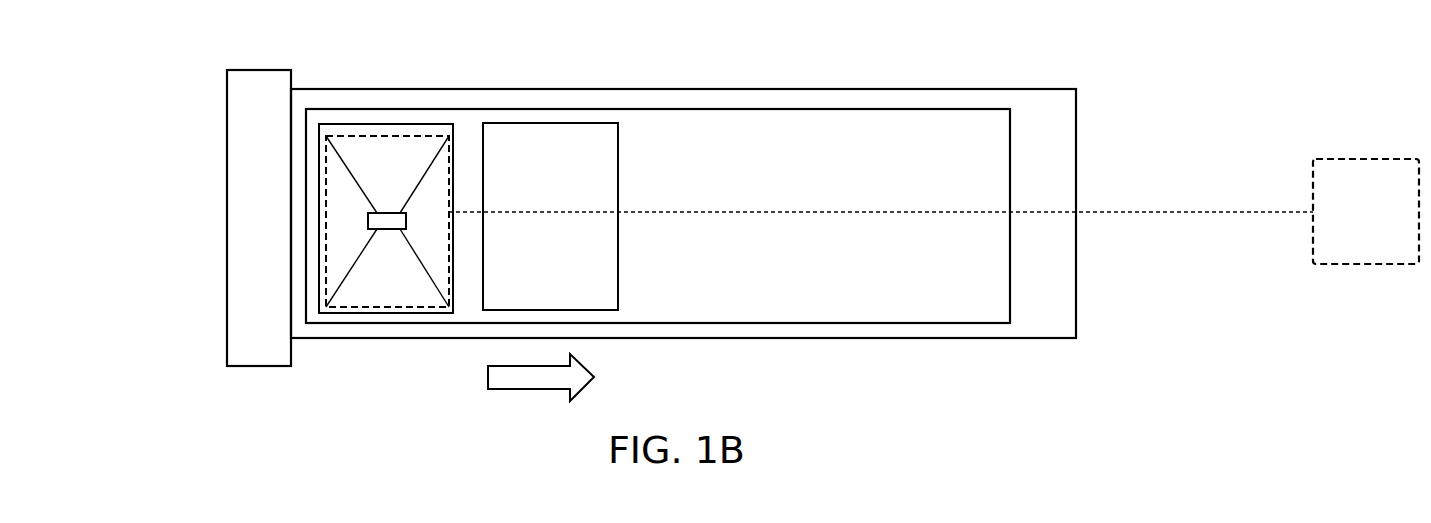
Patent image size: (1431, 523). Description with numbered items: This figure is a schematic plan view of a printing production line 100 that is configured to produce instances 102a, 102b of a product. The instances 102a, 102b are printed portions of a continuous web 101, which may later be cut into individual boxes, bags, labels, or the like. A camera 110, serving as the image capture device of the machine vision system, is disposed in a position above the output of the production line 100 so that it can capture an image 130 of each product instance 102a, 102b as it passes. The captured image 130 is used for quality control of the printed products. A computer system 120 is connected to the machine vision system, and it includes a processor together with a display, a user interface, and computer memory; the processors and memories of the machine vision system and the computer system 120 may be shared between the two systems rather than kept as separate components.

The printing production line 100 is at (180, 226).
The continuous web 101 is at (810, 188).
The product instance 102a is at (375, 314).
The product instance 102b is at (572, 169).
The camera 110 is at (386, 213).
The image 130 is at (416, 136).
The computer system 120 is at (1384, 208).